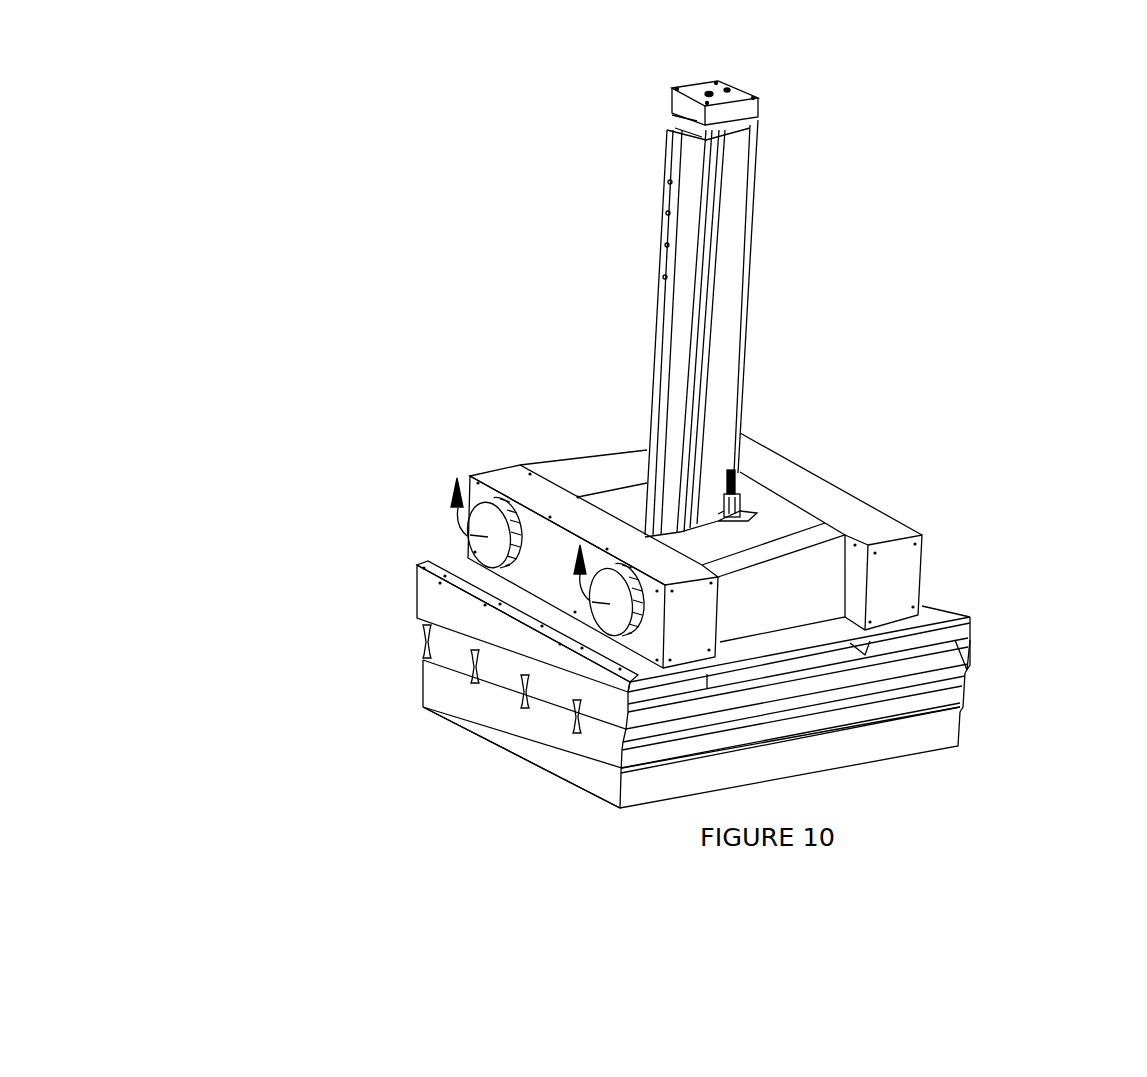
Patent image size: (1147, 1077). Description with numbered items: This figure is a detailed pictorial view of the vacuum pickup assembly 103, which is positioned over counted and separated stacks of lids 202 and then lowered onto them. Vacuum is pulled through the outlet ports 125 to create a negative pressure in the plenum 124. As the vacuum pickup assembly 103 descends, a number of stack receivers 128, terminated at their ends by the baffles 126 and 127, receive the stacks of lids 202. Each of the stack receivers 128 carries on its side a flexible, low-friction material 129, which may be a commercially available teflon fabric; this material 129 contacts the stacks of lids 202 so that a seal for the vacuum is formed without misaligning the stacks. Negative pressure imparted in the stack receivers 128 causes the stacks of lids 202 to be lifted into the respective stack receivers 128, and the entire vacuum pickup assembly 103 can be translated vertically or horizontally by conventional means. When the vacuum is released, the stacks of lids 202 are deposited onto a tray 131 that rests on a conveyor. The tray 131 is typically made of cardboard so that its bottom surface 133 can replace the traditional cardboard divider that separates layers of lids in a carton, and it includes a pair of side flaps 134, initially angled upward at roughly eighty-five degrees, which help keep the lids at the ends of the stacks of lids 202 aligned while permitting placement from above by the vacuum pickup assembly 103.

The vacuum pickup assembly 103 is at (1146, 319).
The plenum 124 is at (855, 515).
The outlet ports 125 is at (603, 563).
The baffle 126 is at (430, 606).
The baffle 127 is at (970, 640).
The stack receivers 128 is at (880, 672).
The flexible, low-friction material 129 is at (955, 670).
The tray 131 is at (925, 753).
The bottom surface 133 is at (805, 773).
The side flaps 134 is at (592, 780).
The stacks of lids 202 is at (593, 737).